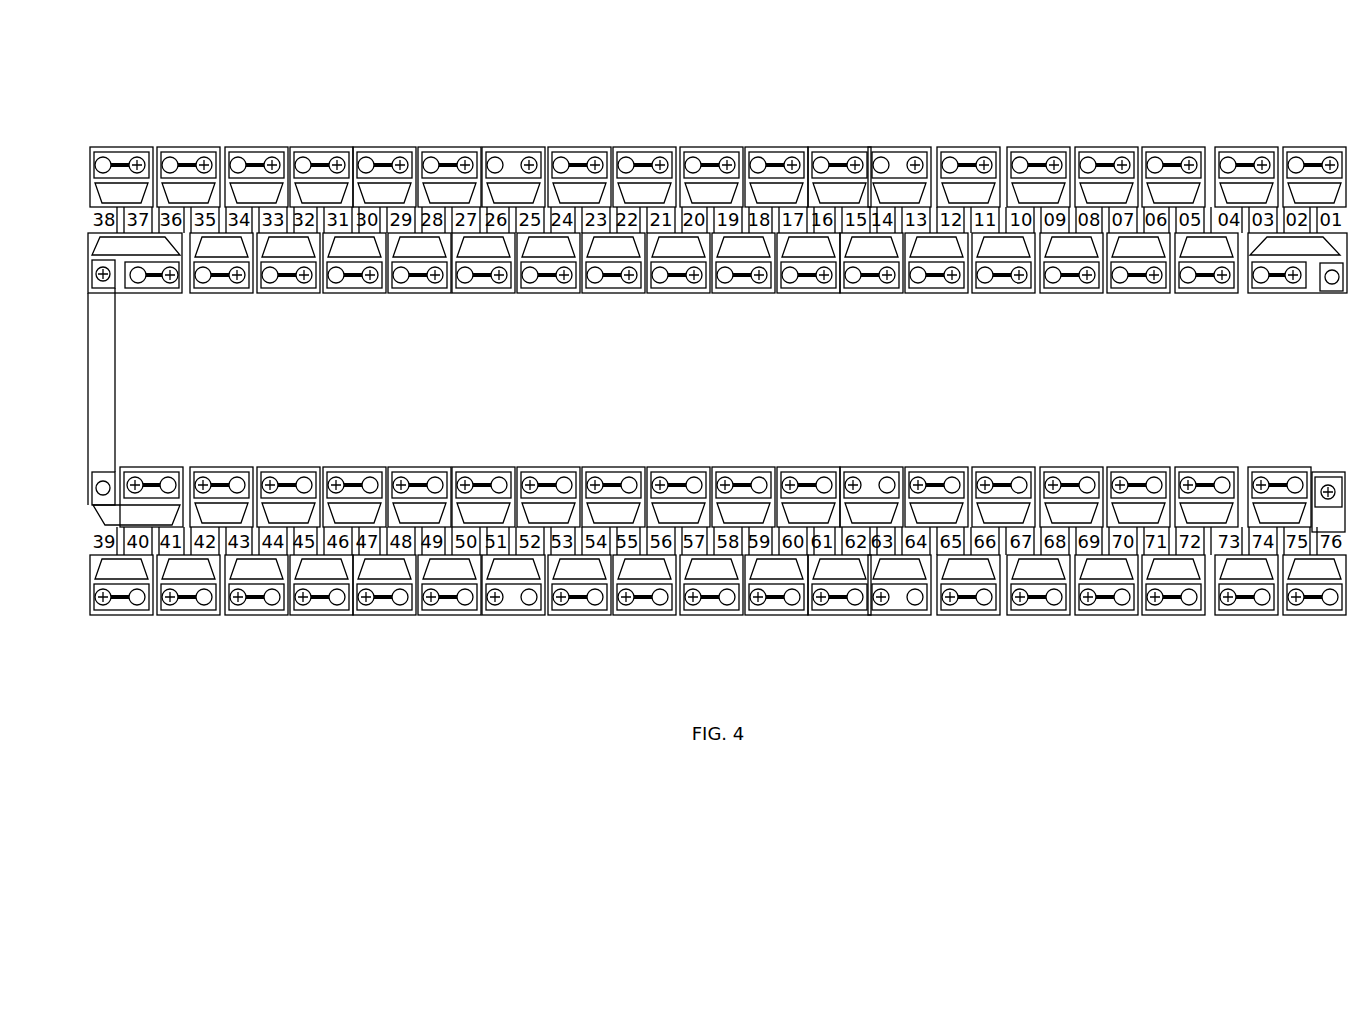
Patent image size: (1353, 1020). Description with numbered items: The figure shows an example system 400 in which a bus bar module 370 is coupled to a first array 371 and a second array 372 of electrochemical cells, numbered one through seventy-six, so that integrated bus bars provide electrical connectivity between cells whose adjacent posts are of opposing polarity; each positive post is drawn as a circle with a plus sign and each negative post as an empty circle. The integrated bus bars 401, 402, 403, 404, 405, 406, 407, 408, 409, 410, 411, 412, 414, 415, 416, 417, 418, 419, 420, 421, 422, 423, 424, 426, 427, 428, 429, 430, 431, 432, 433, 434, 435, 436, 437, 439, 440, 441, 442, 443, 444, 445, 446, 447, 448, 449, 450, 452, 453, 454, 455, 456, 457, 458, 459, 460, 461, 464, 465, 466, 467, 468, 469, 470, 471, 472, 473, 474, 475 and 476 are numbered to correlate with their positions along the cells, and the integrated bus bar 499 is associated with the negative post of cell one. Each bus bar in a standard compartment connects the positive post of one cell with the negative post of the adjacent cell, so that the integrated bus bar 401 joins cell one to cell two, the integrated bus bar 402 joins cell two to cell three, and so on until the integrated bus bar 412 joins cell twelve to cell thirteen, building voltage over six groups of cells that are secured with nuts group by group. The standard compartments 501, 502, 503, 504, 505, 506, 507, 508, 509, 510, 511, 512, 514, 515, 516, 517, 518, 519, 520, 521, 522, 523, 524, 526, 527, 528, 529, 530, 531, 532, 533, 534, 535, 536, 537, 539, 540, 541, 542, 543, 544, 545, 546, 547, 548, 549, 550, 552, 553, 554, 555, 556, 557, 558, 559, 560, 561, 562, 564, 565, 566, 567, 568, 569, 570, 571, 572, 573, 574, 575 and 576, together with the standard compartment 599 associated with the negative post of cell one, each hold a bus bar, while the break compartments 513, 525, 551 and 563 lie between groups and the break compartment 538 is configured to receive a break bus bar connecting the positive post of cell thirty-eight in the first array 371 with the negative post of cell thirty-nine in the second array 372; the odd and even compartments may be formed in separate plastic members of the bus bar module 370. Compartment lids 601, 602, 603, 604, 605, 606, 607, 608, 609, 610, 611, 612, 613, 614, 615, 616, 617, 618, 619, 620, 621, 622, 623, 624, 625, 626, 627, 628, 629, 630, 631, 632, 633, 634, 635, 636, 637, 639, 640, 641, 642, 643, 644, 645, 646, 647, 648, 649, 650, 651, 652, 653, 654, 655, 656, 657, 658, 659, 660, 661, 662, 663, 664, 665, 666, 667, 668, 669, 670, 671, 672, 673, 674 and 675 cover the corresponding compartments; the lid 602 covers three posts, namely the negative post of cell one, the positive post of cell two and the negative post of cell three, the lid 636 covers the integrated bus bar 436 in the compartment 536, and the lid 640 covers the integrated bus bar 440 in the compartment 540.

The connector pin assignment diagram 400 is at (784, 60).
The connector 370 is at (81, 380).
The first pin row 371 is at (81, 222).
The second pin row 372 is at (81, 541).
The ground bus 538 is at (111, 391).
The end pin 499 is at (1340, 296).
The end contact 599 is at (1323, 292).
The contact 401 is at (1313, 162).
The contact 402 is at (1279, 280).
The contact 403 is at (1245, 162).
The contact 404 is at (1205, 280).
The contact 405 is at (1172, 162).
The contact 406 is at (1137, 280).
The contact 407 is at (1105, 162).
The contact 408 is at (1070, 280).
The contact 409 is at (1037, 162).
The contact 410 is at (1002, 280).
The contact 411 is at (967, 162).
The contact 412 is at (935, 280).
The contact 414 is at (870, 280).
The contact 415 is at (838, 162).
The contact 416 is at (807, 280).
The contact 417 is at (775, 162).
The contact 418 is at (742, 280).
The contact 419 is at (710, 162).
The contact 420 is at (677, 280).
The contact 421 is at (643, 162).
The contact 422 is at (612, 280).
The contact 423 is at (578, 162).
The contact 424 is at (547, 280).
The contact 426 is at (482, 280).
The contact 427 is at (448, 162).
The contact 428 is at (418, 280).
The contact 429 is at (383, 162).
The contact 430 is at (353, 280).
The contact 431 is at (320, 162).
The contact 432 is at (287, 280).
The contact 433 is at (255, 162).
The contact 434 is at (220, 280).
The contact 435 is at (187, 162).
The contact 436 is at (154, 280).
The contact 437 is at (120, 162).
The contact 439 is at (120, 600).
The contact 440 is at (153, 486).
The contact 441 is at (187, 600).
The contact 442 is at (220, 486).
The contact 443 is at (255, 600).
The contact 444 is at (287, 486).
The contact 445 is at (320, 600).
The contact 446 is at (353, 486).
The contact 447 is at (383, 600).
The contact 448 is at (418, 486).
The contact 449 is at (448, 600).
The contact 450 is at (482, 486).
The contact 452 is at (547, 486).
The contact 453 is at (578, 600).
The contact 454 is at (612, 486).
The contact 455 is at (643, 600).
The contact 456 is at (677, 486).
The contact 457 is at (710, 600).
The contact 458 is at (742, 486).
The contact 459 is at (775, 600).
The contact 460 is at (807, 486).
The contact 461 is at (838, 600).
The contact 464 is at (935, 486).
The contact 465 is at (967, 600).
The contact 466 is at (1002, 486).
The contact 467 is at (1037, 600).
The contact 468 is at (1070, 486).
The contact 469 is at (1105, 600).
The contact 470 is at (1137, 486).
The contact 471 is at (1172, 600).
The contact 472 is at (1205, 486).
The contact 473 is at (1245, 600).
The contact 474 is at (1278, 486).
The contact 475 is at (1313, 600).
The contact 476 is at (1332, 483).
The pin 501 is at (1295, 143).
The pin 502 is at (1262, 296).
The pin 503 is at (1228, 143).
The pin 504 is at (1185, 296).
The pin 505 is at (1152, 143).
The pin 506 is at (1112, 296).
The pin 507 is at (1087, 143).
The pin 508 is at (1047, 296).
The pin 509 is at (1027, 143).
The pin 510 is at (985, 296).
The pin 511 is at (968, 143).
The pin 512 is at (915, 296).
The pin 513 is at (900, 143).
The pin 514 is at (848, 296).
The pin 515 is at (833, 143).
The pin 516 is at (786, 296).
The pin 517 is at (758, 143).
The pin 518 is at (725, 296).
The pin 519 is at (693, 143).
The pin 520 is at (655, 296).
The pin 521 is at (635, 143).
The pin 522 is at (590, 296).
The pin 523 is at (577, 143).
The pin 524 is at (520, 296).
The pin 525 is at (512, 143).
The pin 526 is at (457, 296).
The pin 527 is at (443, 143).
The pin 528 is at (398, 296).
The pin 529 is at (381, 143).
The pin 530 is at (330, 296).
The pin 531 is at (312, 143).
The pin 532 is at (268, 296).
The pin 533 is at (247, 143).
The pin 534 is at (201, 296).
The pin 535 is at (180, 143).
The pin 536 is at (127, 296).
The pin 537 is at (115, 143).
The pin 539 is at (100, 618).
The pin 540 is at (143, 464).
The pin 541 is at (168, 618).
The pin 542 is at (210, 464).
The pin 543 is at (232, 618).
The pin 544 is at (275, 464).
The pin 545 is at (296, 618).
The pin 546 is at (348, 464).
The pin 547 is at (362, 618).
The pin 548 is at (405, 464).
The pin 549 is at (422, 618).
The pin 550 is at (460, 464).
The pin 551 is at (490, 618).
The pin 552 is at (535, 464).
The pin 553 is at (555, 618).
The pin 554 is at (593, 464).
The pin 555 is at (618, 618).
The pin 556 is at (660, 464).
The pin 557 is at (688, 618).
The pin 558 is at (722, 464).
The pin 559 is at (748, 618).
The pin 560 is at (797, 464).
The pin 561 is at (810, 618).
The pin 562 is at (865, 464).
The pin 563 is at (878, 618).
The pin 564 is at (935, 464).
The pin 565 is at (948, 618).
The pin 566 is at (993, 464).
The pin 567 is at (1012, 618).
The pin 568 is at (1045, 464).
The pin 569 is at (1080, 618).
The pin 570 is at (1122, 464).
The pin 571 is at (1153, 618).
The pin 572 is at (1192, 464).
The pin 573 is at (1225, 618).
The pin 574 is at (1260, 464).
The pin 575 is at (1305, 618).
The pin 576 is at (1318, 466).
The signal designation 601 is at (1302, 202).
The signal designation 602 is at (1285, 255).
The signal designation 603 is at (1234, 202).
The signal designation 604 is at (1194, 255).
The signal designation 605 is at (1161, 202).
The signal designation 606 is at (1126, 255).
The signal designation 607 is at (1094, 202).
The signal designation 608 is at (1059, 255).
The signal designation 609 is at (1026, 202).
The signal designation 610 is at (991, 255).
The signal designation 611 is at (956, 202).
The signal designation 612 is at (924, 255).
The signal designation 613 is at (887, 202).
The signal designation 614 is at (859, 255).
The signal designation 615 is at (827, 202).
The signal designation 616 is at (796, 255).
The signal designation 617 is at (764, 202).
The signal designation 618 is at (731, 255).
The signal designation 619 is at (699, 202).
The signal designation 620 is at (666, 255).
The signal designation 621 is at (632, 202).
The signal designation 622 is at (601, 255).
The signal designation 623 is at (567, 202).
The signal designation 624 is at (536, 255).
The signal designation 625 is at (501, 202).
The signal designation 626 is at (471, 255).
The signal designation 627 is at (437, 202).
The signal designation 628 is at (407, 255).
The signal designation 629 is at (372, 202).
The signal designation 630 is at (342, 255).
The signal designation 631 is at (309, 202).
The signal designation 632 is at (276, 255).
The signal designation 633 is at (244, 202).
The signal designation 634 is at (209, 255).
The signal designation 635 is at (176, 202).
The signal designation 636 is at (123, 255).
The signal designation 637 is at (109, 202).
The signal designation 639 is at (109, 577).
The signal designation 640 is at (125, 524).
The signal designation 641 is at (176, 577).
The signal designation 642 is at (209, 524).
The signal designation 643 is at (244, 577).
The signal designation 644 is at (276, 524).
The signal designation 645 is at (309, 577).
The signal designation 646 is at (342, 524).
The signal designation 647 is at (372, 577).
The signal designation 648 is at (407, 524).
The signal designation 649 is at (437, 577).
The signal designation 650 is at (471, 524).
The signal designation 651 is at (501, 577).
The signal designation 652 is at (536, 524).
The signal designation 653 is at (567, 577).
The signal designation 654 is at (601, 524).
The signal designation 655 is at (632, 577).
The signal designation 656 is at (666, 524).
The signal designation 657 is at (699, 577).
The signal designation 658 is at (731, 524).
The signal designation 659 is at (764, 577).
The signal designation 660 is at (796, 524).
The signal designation 661 is at (827, 577).
The signal designation 662 is at (859, 524).
The signal designation 663 is at (887, 577).
The signal designation 664 is at (924, 524).
The signal designation 665 is at (956, 577).
The signal designation 666 is at (991, 524).
The signal designation 667 is at (1026, 577).
The signal designation 668 is at (1059, 524).
The signal designation 669 is at (1094, 577).
The signal designation 670 is at (1126, 524).
The signal designation 671 is at (1161, 577).
The signal designation 672 is at (1194, 524).
The signal designation 673 is at (1234, 577).
The signal designation 674 is at (1267, 524).
The signal designation 675 is at (1302, 577).